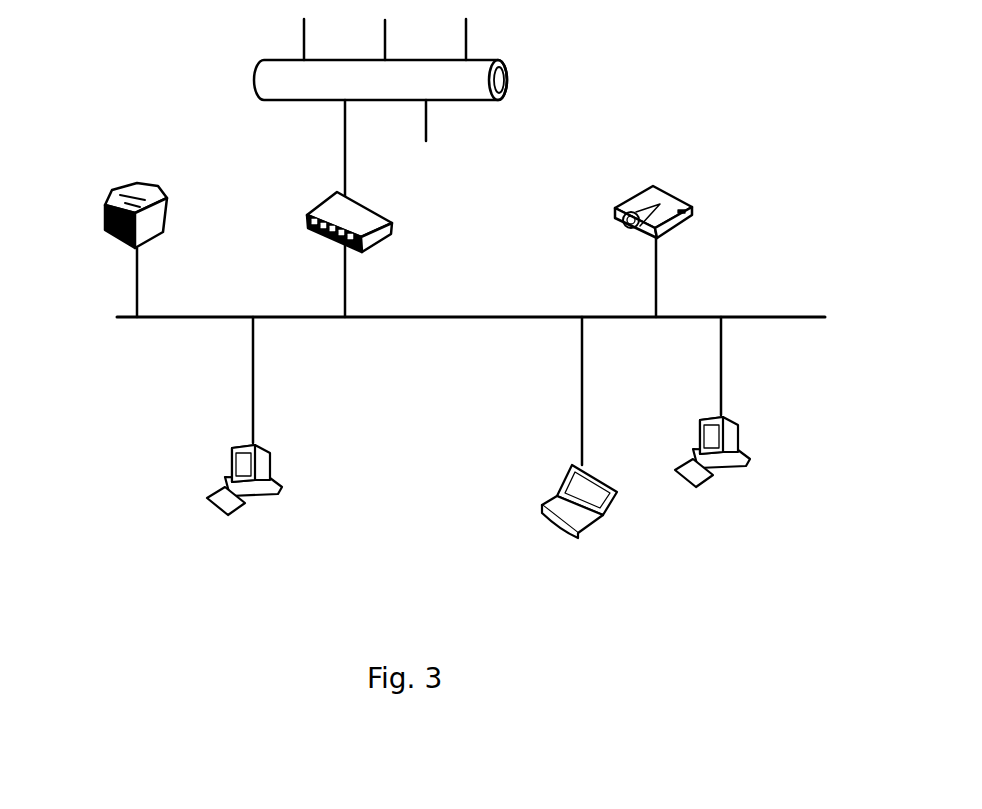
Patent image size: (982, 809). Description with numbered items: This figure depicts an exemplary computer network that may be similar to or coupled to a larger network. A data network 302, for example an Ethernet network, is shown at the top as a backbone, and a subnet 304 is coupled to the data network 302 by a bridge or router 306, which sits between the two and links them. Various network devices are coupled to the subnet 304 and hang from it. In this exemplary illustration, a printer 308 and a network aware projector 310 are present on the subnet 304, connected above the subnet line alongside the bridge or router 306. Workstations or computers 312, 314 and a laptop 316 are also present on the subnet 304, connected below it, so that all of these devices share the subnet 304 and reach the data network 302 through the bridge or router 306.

The data network 302 is at (485, 59).
The subnet 304 is at (783, 313).
The bridge or router 306 is at (308, 215).
The printer 308 is at (103, 217).
The network aware projector 310 is at (692, 208).
The workstation or computer 312 is at (763, 443).
The workstation or computer 314 is at (282, 482).
The laptop 316 is at (617, 502).